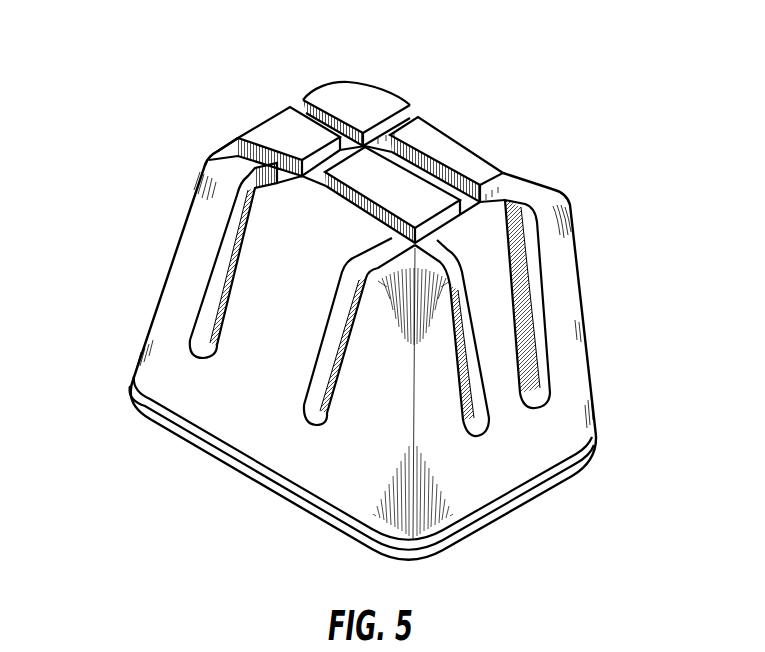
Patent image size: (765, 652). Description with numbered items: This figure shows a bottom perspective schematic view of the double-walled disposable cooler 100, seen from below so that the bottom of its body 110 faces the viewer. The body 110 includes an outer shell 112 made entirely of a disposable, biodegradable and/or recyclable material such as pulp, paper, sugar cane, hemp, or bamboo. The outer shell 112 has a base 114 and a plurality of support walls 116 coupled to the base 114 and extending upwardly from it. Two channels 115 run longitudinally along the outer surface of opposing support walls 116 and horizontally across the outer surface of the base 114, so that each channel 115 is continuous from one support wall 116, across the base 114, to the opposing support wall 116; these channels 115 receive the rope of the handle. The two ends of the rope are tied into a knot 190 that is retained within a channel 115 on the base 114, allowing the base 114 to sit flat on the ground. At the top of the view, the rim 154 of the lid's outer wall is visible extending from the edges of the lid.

The double-walled disposable cooler 100 is at (357, 284).
The body 110 is at (274, 125).
The knot 190 is at (247, 108).
The base 114 is at (213, 154).
The channels 115 is at (182, 372).
The support walls 116 is at (282, 432).
The outer shell 112 is at (563, 407).
The rim 154 is at (557, 470).